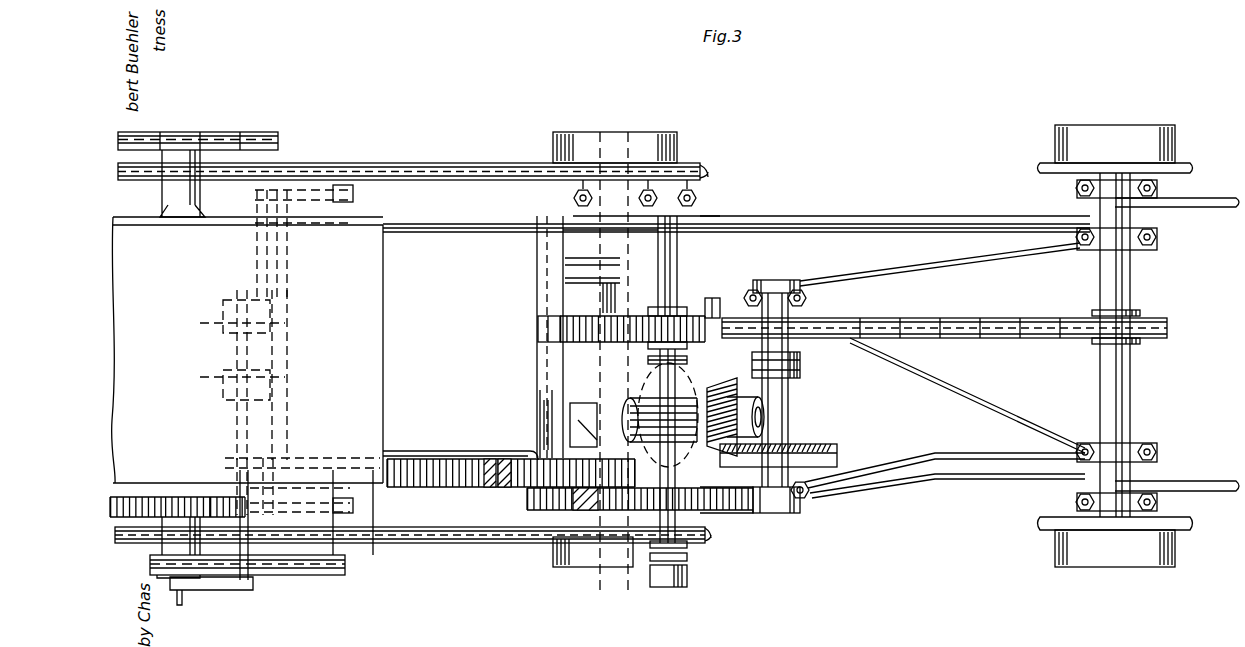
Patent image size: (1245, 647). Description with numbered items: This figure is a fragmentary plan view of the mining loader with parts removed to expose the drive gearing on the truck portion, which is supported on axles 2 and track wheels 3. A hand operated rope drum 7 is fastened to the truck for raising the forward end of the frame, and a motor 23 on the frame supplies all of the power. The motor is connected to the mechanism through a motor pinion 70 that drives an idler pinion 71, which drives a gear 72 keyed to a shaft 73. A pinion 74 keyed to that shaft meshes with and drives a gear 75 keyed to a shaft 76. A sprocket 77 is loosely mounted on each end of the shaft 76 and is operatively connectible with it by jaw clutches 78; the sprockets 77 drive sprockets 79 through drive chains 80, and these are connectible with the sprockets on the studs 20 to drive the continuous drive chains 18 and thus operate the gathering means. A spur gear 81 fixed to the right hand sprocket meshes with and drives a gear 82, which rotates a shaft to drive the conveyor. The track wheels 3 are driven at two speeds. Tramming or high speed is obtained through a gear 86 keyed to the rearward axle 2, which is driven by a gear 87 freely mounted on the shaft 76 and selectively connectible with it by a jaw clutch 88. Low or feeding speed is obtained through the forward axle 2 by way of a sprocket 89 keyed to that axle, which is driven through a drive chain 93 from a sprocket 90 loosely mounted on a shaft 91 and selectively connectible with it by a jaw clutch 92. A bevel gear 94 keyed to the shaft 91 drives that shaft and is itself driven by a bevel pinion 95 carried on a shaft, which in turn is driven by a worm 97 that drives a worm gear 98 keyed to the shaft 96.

The axle 2 is at (625, 272).
The wheel 3 is at (678, 135).
The rope drum 7 is at (212, 354).
The drive chain 18 is at (204, 130).
The stud 20 is at (193, 488).
The motor 23 is at (282, 350).
The motor pinion 70 is at (418, 488).
The idler pinion 71 is at (470, 488).
The gear 72 is at (512, 488).
The shaft 73 is at (573, 426).
The pinion 74 is at (540, 513).
The gear 75 is at (768, 513).
The shaft 76 is at (680, 278).
The sprocket 77 is at (704, 168).
The jaw clutch 78 is at (681, 582).
The sprocket 79 is at (141, 180).
The drive chain 80 is at (418, 161).
The spur gear 81 is at (163, 488).
The gear 82 is at (119, 489).
The gear 86 is at (540, 329).
The gear 87 is at (704, 308).
The jaw clutch 88 is at (687, 358).
The sprocket 89 is at (1149, 312).
The sprocket 90 is at (806, 318).
The shaft 91 is at (783, 413).
The jaw clutch 92 is at (800, 372).
The drive chain 93 is at (905, 318).
The bevel gear 94 is at (829, 452).
The bevel pinion 95 is at (716, 396).
The shaft 96 is at (763, 417).
The worm 97 is at (631, 430).
The worm gear 98 is at (732, 513).